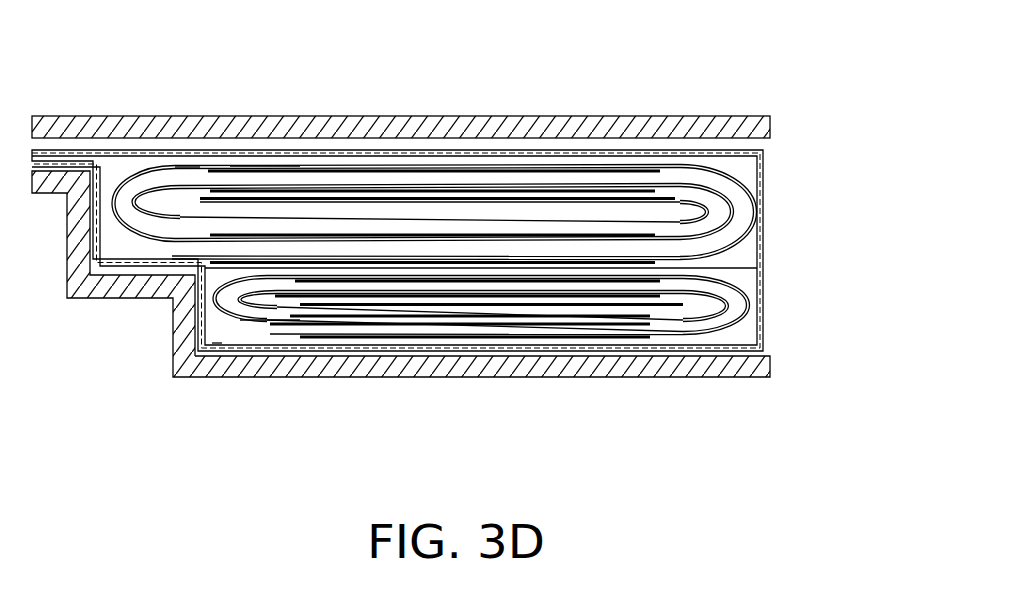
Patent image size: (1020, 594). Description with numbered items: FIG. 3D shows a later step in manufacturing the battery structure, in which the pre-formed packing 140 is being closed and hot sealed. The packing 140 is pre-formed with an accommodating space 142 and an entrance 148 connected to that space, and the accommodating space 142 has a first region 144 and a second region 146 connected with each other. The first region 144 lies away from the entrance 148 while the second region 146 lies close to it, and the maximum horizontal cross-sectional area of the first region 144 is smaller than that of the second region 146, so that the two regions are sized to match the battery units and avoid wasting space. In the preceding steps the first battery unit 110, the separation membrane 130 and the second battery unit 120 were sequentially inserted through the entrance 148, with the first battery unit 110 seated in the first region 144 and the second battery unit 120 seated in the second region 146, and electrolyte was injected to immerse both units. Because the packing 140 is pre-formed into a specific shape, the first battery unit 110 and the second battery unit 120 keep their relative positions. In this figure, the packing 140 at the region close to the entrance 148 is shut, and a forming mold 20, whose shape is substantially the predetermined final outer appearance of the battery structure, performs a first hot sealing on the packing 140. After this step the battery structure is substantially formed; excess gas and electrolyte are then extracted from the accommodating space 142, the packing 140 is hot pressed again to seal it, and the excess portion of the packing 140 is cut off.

The forming mold 20 is at (770, 125).
The first battery unit 110 is at (262, 321).
The second battery unit 120 is at (262, 163).
The separation membrane 130 is at (215, 272).
The packing 140 is at (765, 178).
The accommodating space 142 is at (502, 251).
The first region 144 is at (750, 328).
The second region 146 is at (750, 250).
The entrance 148 is at (187, 157).